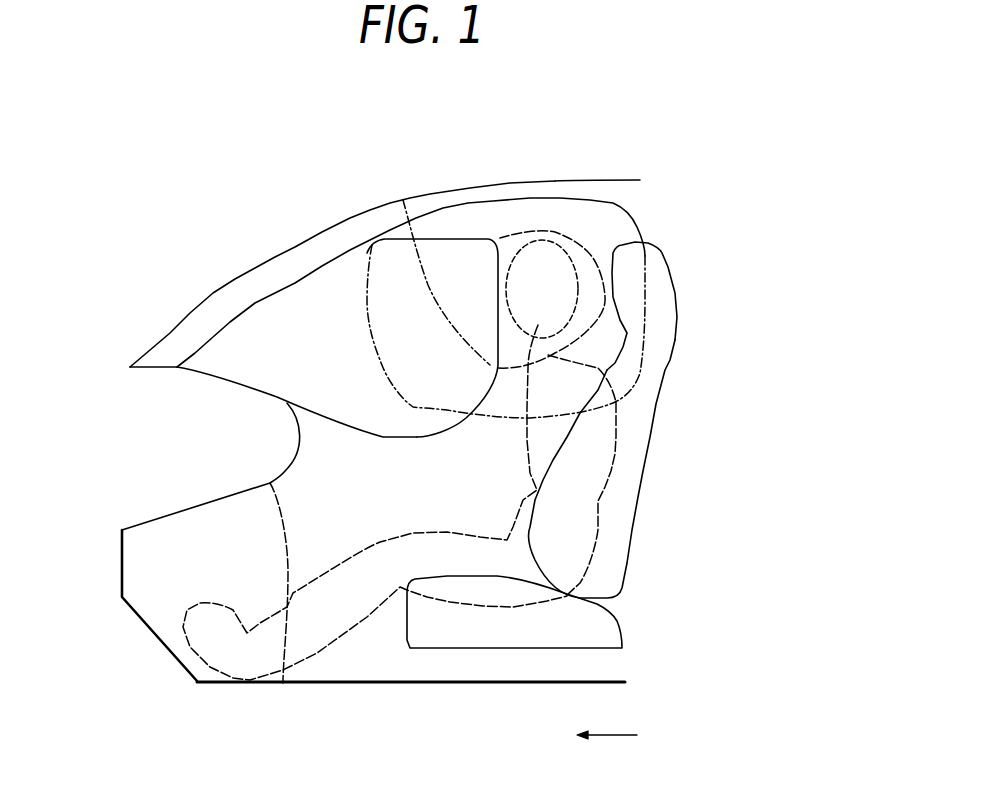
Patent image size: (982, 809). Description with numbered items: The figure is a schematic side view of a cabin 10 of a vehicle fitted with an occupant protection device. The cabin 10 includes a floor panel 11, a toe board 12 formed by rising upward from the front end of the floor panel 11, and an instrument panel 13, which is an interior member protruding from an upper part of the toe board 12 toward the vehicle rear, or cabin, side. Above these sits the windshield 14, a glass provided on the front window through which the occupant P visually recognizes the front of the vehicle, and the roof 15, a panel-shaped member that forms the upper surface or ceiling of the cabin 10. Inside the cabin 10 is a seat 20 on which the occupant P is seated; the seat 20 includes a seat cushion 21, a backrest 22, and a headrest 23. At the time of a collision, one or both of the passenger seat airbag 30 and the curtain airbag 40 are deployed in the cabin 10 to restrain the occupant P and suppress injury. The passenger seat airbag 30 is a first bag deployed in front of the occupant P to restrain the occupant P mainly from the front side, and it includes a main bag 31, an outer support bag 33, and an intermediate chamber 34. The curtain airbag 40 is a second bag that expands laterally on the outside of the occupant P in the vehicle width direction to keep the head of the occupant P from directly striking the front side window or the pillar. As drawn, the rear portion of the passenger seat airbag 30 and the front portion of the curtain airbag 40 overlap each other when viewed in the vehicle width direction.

The cabin 10 is at (174, 206).
The floor panel 11 is at (395, 684).
The toe board 12 is at (172, 652).
The instrument panel 13 is at (283, 684).
The windshield 14 is at (216, 296).
The roof 15 is at (605, 180).
The seat 20 is at (658, 210).
The seat cushion 21 is at (623, 630).
The backrest 22 is at (630, 532).
The headrest 23 is at (677, 280).
The passenger seat airbag 30 is at (330, 232).
The main bag 31 is at (440, 236).
The outer support bag 33 is at (493, 236).
The intermediate chamber 34 is at (403, 200).
The curtain airbag 40 is at (517, 200).
The occupant P is at (564, 210).